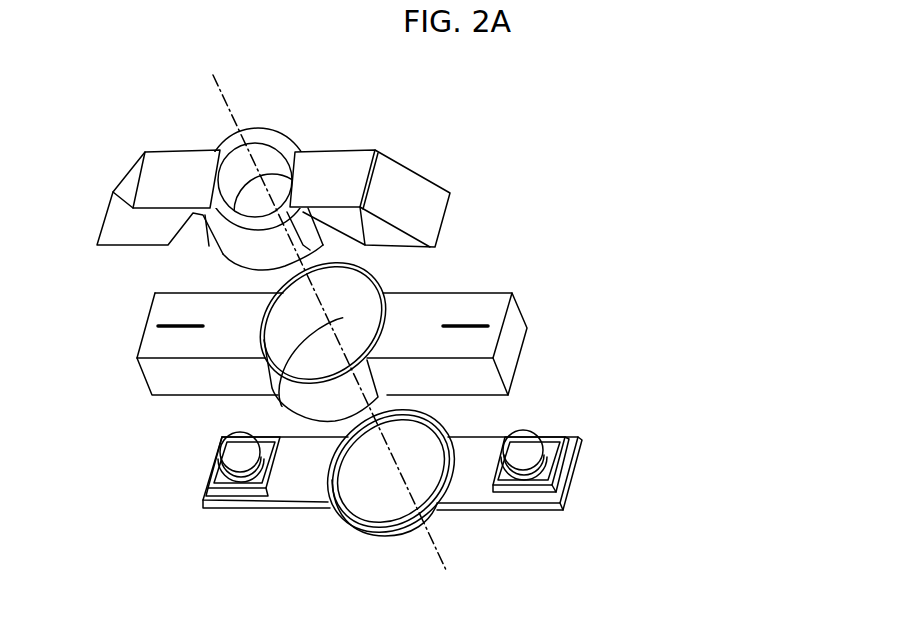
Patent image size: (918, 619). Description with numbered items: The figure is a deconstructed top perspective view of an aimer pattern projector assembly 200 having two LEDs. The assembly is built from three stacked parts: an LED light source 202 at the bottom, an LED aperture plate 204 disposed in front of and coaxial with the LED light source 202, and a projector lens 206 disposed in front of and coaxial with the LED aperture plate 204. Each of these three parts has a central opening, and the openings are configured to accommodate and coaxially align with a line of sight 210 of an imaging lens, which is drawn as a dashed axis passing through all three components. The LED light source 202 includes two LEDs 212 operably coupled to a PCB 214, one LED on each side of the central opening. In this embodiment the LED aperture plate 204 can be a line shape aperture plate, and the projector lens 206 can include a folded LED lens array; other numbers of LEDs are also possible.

The aimer pattern projector assembly 200 is at (681, 116).
The LED light source 202 is at (410, 487).
The LED aperture plate 204 is at (522, 313).
The projector lens 206 is at (413, 170).
The line of sight 210 is at (227, 93).
The LEDs 212 is at (222, 450).
The PCB 214 is at (308, 512).